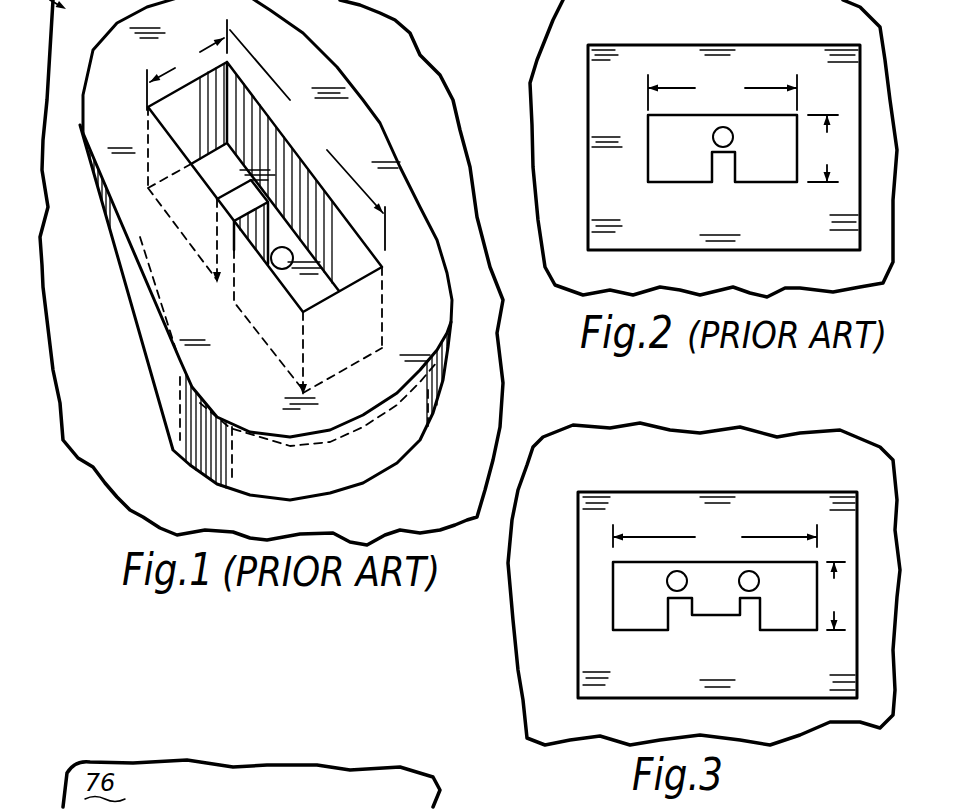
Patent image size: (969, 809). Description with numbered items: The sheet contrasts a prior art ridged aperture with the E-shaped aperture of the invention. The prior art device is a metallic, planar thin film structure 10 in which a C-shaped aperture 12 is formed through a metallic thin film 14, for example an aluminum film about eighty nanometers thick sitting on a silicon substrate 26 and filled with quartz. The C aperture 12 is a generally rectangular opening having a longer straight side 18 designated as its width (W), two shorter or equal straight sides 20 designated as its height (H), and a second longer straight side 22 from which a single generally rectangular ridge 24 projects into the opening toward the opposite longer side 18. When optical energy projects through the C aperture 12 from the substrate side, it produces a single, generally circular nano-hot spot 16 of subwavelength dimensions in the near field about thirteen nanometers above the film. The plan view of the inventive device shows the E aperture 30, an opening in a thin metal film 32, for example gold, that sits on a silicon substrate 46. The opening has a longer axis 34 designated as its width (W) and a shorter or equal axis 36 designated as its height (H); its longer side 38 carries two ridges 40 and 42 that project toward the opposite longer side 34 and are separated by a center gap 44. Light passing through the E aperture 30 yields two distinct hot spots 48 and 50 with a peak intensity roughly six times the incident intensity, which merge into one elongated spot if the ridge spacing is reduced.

In FIG. 2, the planar thin film structure 10 is at (526, 56).
In FIG. 1, the C-shaped aperture 12 is at (255, 150).
In FIG. 2, the C-shaped aperture 12 is at (666, 132).
In FIG. 1, the metallic thin film 14 is at (420, 363).
In FIG. 2, the metallic thin film 14 is at (605, 72).
In FIG. 1, the nano-hot spot 16 is at (282, 246).
In FIG. 2, the nano-hot spot 16 is at (733, 135).
In FIG. 1, the longer straight side 18 is at (378, 236).
In FIG. 2, the longer straight side 18 is at (737, 112).
In FIG. 1, the shorter straight sides 20 is at (185, 125).
In FIG. 2, the shorter straight sides 20 is at (648, 172).
In FIG. 1, the second longer straight side 22 is at (197, 163).
In FIG. 2, the second longer straight side 22 is at (688, 178).
In FIG. 1, the ridge 24 is at (207, 268).
In FIG. 2, the ridge 24 is at (722, 165).
In FIG. 1, the silicon substrate 26 is at (465, 491).
In FIG. 2, the silicon substrate 26 is at (608, 28).
In FIG. 3, the E aperture 30 is at (628, 592).
In FIG. 3, the thin metal film 32 is at (597, 517).
In FIG. 3, the longer axis 34 is at (730, 560).
In FIG. 3, the shorter axis 36 is at (613, 610).
In FIG. 3, the longer side 38 is at (633, 632).
In FIG. 3, the first ridge 40 is at (680, 603).
In FIG. 3, the second ridge 42 is at (748, 603).
In FIG. 3, the center gap 44 is at (713, 613).
In FIG. 3, the silicon substrate 46 is at (680, 471).
In FIG. 3, the first hot spot 48 is at (687, 585).
In FIG. 3, the second hot spot 50 is at (759, 585).